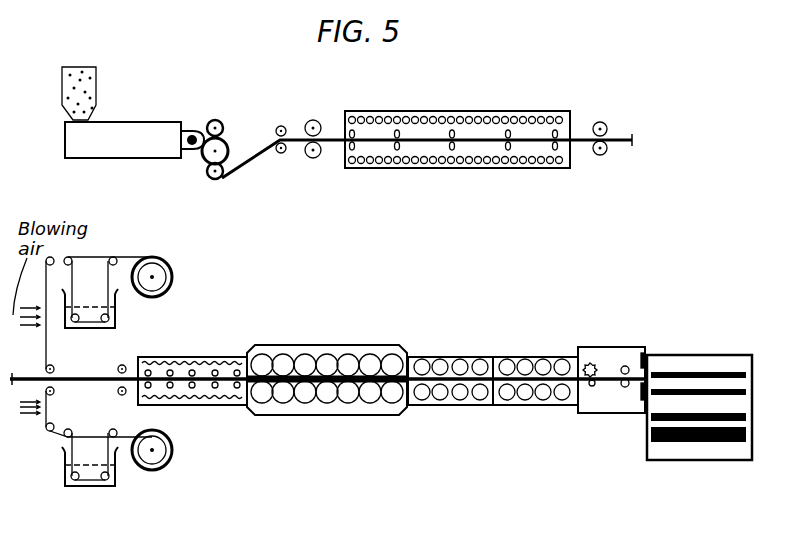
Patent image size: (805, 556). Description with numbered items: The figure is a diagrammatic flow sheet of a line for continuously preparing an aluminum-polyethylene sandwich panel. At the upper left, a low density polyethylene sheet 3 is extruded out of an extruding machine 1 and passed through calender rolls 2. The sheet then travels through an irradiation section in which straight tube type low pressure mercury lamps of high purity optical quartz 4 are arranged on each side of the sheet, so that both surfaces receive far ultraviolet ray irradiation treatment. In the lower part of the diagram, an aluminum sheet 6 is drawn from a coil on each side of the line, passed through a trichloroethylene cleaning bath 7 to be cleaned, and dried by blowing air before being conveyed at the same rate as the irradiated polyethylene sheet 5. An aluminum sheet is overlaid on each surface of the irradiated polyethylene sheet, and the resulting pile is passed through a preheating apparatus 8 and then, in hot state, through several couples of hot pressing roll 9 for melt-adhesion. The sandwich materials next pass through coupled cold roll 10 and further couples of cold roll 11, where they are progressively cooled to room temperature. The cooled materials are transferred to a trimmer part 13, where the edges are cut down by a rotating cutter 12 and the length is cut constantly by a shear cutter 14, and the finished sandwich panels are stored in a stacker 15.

The extruding machine 1 is at (79, 67).
The calender rolls 2 is at (220, 121).
The low density polyethylene sheet 3 is at (245, 163).
The high purity optical quartz low pressure mercury lamps 4 is at (422, 112).
The irradiated polyethylene sheet 5 is at (104, 377).
The aluminum sheet 6 is at (162, 257).
The trichloroethylene cleaning bath 7 is at (86, 330).
The preheating apparatus 8 is at (222, 406).
The hot pressing roll 9 is at (345, 362).
The cold roll 10 is at (440, 406).
The cold roll 11 is at (546, 406).
The rotating cutter 12 is at (590, 362).
The trimmer part 13 is at (600, 414).
The shear cutter 14 is at (645, 352).
The stacker 15 is at (670, 461).